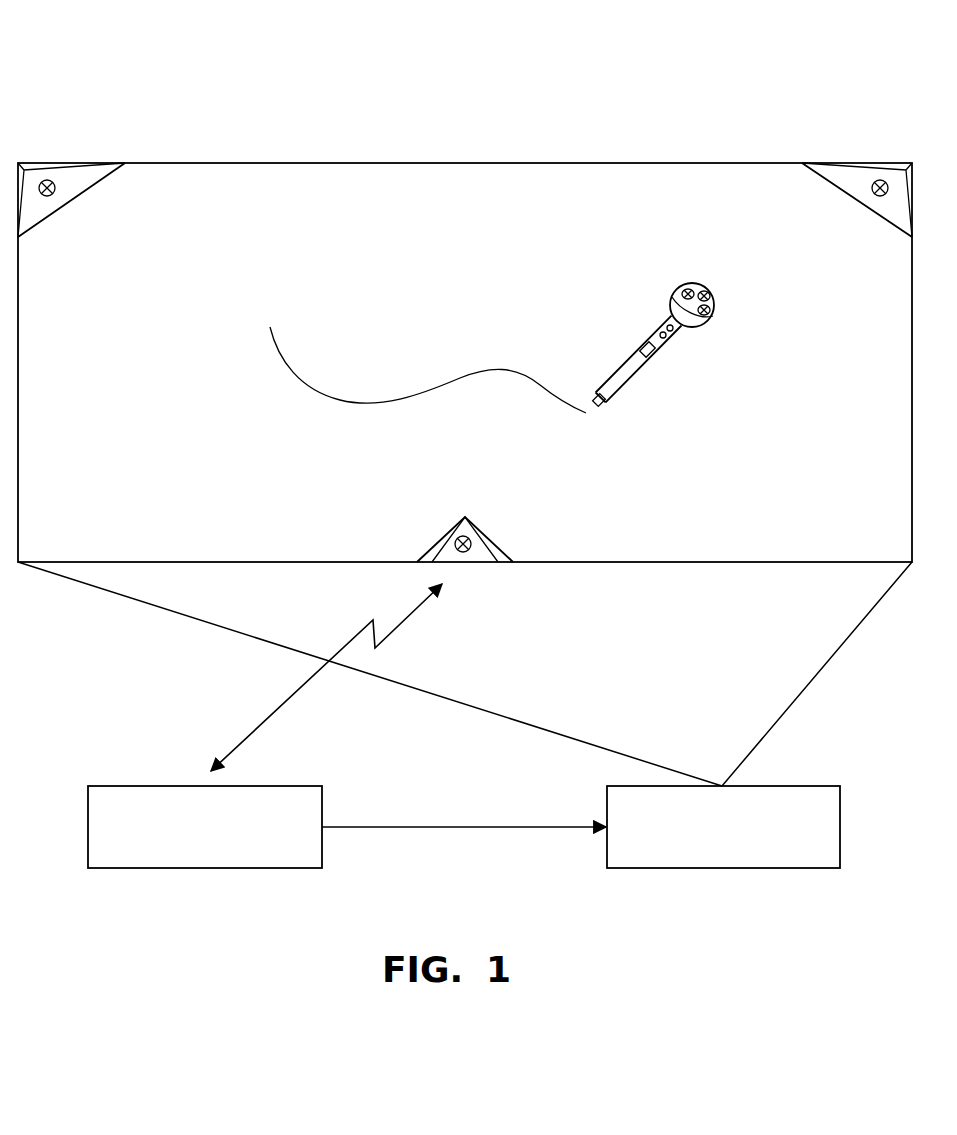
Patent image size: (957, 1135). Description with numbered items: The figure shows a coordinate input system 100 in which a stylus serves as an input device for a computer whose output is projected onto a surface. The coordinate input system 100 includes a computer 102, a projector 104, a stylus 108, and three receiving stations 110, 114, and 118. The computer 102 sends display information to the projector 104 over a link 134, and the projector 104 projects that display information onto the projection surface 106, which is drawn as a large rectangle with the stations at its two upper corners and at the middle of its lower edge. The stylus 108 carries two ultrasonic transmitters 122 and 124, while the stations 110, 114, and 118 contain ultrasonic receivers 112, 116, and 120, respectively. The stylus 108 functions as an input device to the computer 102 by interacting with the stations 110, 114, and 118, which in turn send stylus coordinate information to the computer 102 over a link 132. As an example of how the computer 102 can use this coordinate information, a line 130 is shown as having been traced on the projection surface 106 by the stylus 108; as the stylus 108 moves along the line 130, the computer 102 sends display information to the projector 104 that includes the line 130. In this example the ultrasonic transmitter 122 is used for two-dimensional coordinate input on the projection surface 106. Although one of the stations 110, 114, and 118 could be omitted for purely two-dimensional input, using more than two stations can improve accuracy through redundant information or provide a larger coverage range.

The coordinate input system 100 is at (693, 98).
The computer 102 is at (144, 786).
The projector 104 is at (786, 786).
The projection surface 106 is at (466, 163).
The stylus 108 is at (629, 358).
The receiving station 110 is at (94, 188).
The ultrasonic receiver 112 is at (61, 202).
The receiving station 114 is at (437, 540).
The ultrasonic receiver 116 is at (476, 532).
The receiving station 118 is at (826, 185).
The ultrasonic receiver 120 is at (867, 202).
The ultrasonic transmitter 122 is at (604, 410).
The ultrasonic transmitter 124 is at (697, 281).
The line 130 is at (350, 401).
The link 132 is at (276, 710).
The link 134 is at (461, 825).